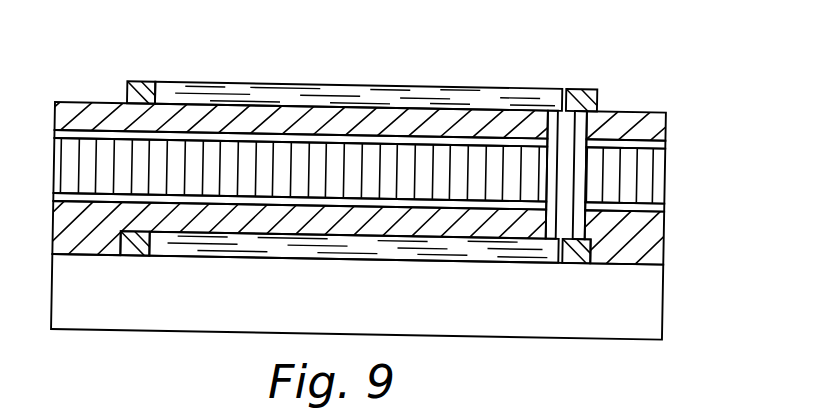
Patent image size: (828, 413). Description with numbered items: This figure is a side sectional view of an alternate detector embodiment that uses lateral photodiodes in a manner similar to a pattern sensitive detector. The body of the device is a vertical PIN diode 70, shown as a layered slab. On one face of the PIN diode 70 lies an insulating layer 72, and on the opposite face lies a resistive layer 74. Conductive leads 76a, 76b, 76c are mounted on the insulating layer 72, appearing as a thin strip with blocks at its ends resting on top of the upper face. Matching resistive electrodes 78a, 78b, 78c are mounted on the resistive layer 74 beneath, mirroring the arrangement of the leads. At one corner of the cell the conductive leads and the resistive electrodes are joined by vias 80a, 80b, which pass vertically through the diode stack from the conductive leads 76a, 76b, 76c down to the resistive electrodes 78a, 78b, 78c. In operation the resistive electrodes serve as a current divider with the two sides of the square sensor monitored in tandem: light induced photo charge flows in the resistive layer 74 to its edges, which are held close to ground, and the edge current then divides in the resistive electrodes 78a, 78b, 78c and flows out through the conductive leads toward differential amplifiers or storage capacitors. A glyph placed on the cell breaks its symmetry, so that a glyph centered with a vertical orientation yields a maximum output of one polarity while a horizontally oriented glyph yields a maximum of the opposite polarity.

The vertical PIN diode 70 is at (628, 185).
The insulating layer 72 is at (648, 125).
The resistive layer 74 is at (647, 235).
The conductive lead 76a is at (141, 85).
The conductive lead 76b is at (317, 95).
The conductive lead 76c is at (587, 92).
The resistive electrode 78a is at (140, 240).
The resistive electrode 78b is at (468, 252).
The resistive electrode 78c is at (582, 253).
The via 80a is at (547, 166).
The via 80b is at (586, 175).